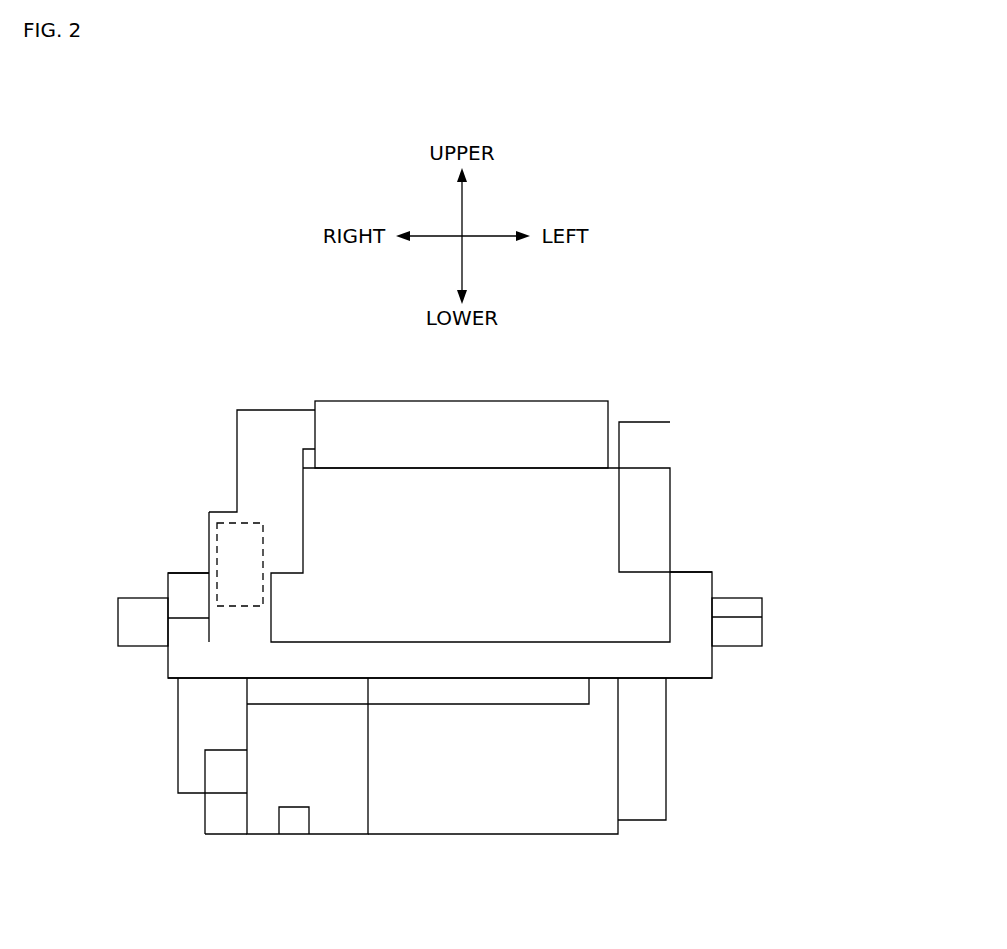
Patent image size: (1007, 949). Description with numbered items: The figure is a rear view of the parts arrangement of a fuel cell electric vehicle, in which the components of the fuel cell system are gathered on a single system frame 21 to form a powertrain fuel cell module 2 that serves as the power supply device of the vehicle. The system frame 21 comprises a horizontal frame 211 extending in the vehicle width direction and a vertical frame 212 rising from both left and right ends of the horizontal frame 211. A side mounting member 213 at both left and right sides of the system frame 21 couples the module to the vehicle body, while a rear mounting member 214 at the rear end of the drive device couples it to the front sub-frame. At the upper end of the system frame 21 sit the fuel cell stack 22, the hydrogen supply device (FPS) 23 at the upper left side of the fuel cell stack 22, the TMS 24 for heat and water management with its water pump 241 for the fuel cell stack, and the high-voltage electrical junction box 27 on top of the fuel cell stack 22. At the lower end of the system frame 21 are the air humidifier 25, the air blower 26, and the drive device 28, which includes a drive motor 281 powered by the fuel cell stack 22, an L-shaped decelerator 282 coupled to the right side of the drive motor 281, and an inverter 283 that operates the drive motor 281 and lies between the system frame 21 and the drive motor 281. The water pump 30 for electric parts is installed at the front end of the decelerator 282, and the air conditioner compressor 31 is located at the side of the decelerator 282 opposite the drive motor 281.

The powertrain fuel cell module 2 is at (606, 364).
The system frame 21 is at (763, 513).
The horizontal frame 211 is at (653, 655).
The vertical frame 212 is at (182, 577).
The side mounting member 213 is at (117, 624).
The rear mounting member 214 is at (291, 826).
The fuel cell stack 22 is at (585, 468).
The hydrogen supply device (FPS) 23 is at (670, 462).
The TMS 24 is at (275, 410).
The water pump for fuel cell stack 241 is at (232, 523).
The air humidifier 25 is at (666, 765).
The air blower 26 is at (185, 727).
The electrical junction box 27 is at (550, 401).
The drive device 28 is at (322, 907).
The drive motor 281 is at (408, 832).
The decelerator 282 is at (343, 826).
The inverter 283 is at (568, 699).
The water pump for electric parts 30 is at (222, 826).
The air conditioner compressor 31 is at (215, 780).